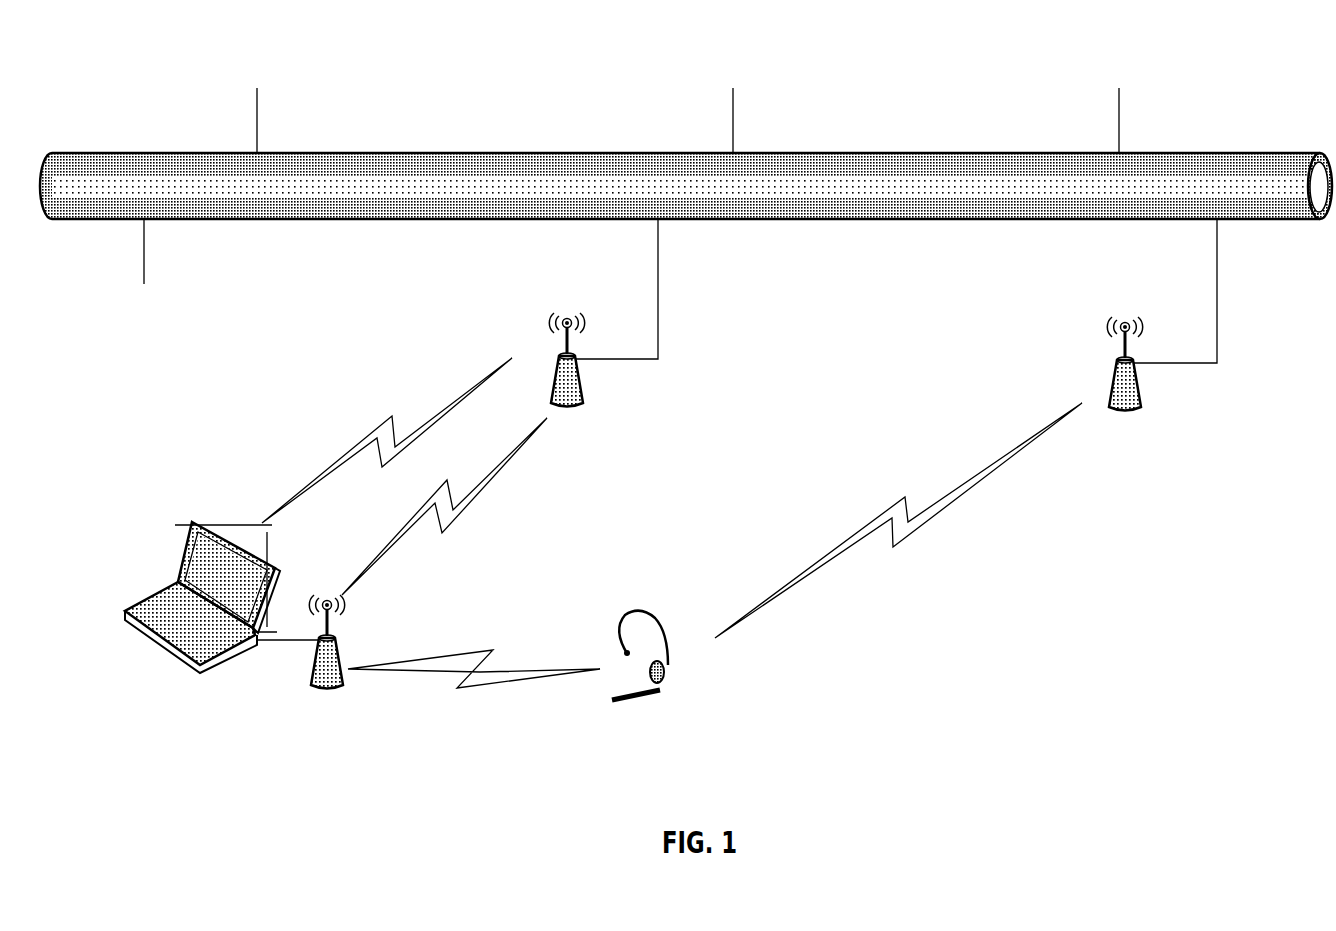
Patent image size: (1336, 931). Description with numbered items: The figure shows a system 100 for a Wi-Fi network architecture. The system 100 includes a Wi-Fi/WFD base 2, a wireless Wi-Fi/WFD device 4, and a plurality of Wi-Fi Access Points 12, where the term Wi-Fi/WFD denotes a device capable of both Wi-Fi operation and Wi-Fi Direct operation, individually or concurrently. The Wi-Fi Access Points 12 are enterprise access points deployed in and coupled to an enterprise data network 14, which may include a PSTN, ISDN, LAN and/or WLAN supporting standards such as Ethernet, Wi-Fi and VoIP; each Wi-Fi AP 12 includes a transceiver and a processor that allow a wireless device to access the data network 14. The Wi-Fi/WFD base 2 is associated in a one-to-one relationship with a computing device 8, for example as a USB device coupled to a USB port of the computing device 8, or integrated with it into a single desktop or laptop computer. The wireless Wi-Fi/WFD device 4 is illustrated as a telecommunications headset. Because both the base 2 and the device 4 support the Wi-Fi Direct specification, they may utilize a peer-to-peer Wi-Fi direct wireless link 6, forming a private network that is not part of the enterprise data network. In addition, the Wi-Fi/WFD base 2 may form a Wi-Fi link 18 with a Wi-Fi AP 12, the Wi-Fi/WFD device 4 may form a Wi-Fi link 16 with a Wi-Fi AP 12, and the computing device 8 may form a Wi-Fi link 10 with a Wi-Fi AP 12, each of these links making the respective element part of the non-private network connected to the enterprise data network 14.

The system 100 is at (278, 33).
The data network 14 is at (686, 186).
The Wi-Fi Access Point 12 is at (916, 334).
The Wi-Fi link 10 is at (343, 495).
The Wi-Fi link 18 is at (481, 506).
The Wi-Fi link 16 is at (898, 520).
The peer-to-peer Wi-Fi direct wireless link 6 is at (474, 627).
The computing device 8 is at (182, 563).
The Wi-Fi/WFD base 2 is at (328, 704).
The wireless Wi-Fi/WFD device 4 is at (642, 702).